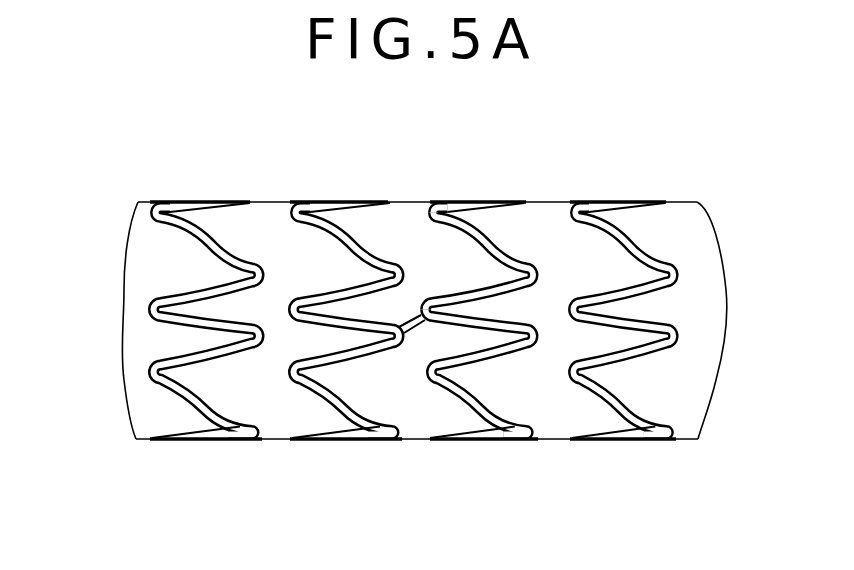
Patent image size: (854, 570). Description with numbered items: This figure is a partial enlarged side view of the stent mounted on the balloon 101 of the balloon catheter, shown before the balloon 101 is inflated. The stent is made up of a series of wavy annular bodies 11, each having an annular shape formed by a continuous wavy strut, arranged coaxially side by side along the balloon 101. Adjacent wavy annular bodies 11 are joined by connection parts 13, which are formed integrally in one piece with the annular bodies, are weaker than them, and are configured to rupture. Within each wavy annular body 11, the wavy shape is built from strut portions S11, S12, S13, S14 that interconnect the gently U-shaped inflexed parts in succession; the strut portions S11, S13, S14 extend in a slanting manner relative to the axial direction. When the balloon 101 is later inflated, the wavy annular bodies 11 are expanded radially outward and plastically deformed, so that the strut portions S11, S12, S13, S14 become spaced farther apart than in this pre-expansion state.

The balloon 101 is at (385, 318).
The wavy annular body 11 is at (507, 318).
The connection part 13 is at (420, 328).
The strut portion S11 is at (487, 355).
The strut portion S12 is at (493, 323).
The strut portion S13 is at (493, 293).
The strut portion S14 is at (490, 246).